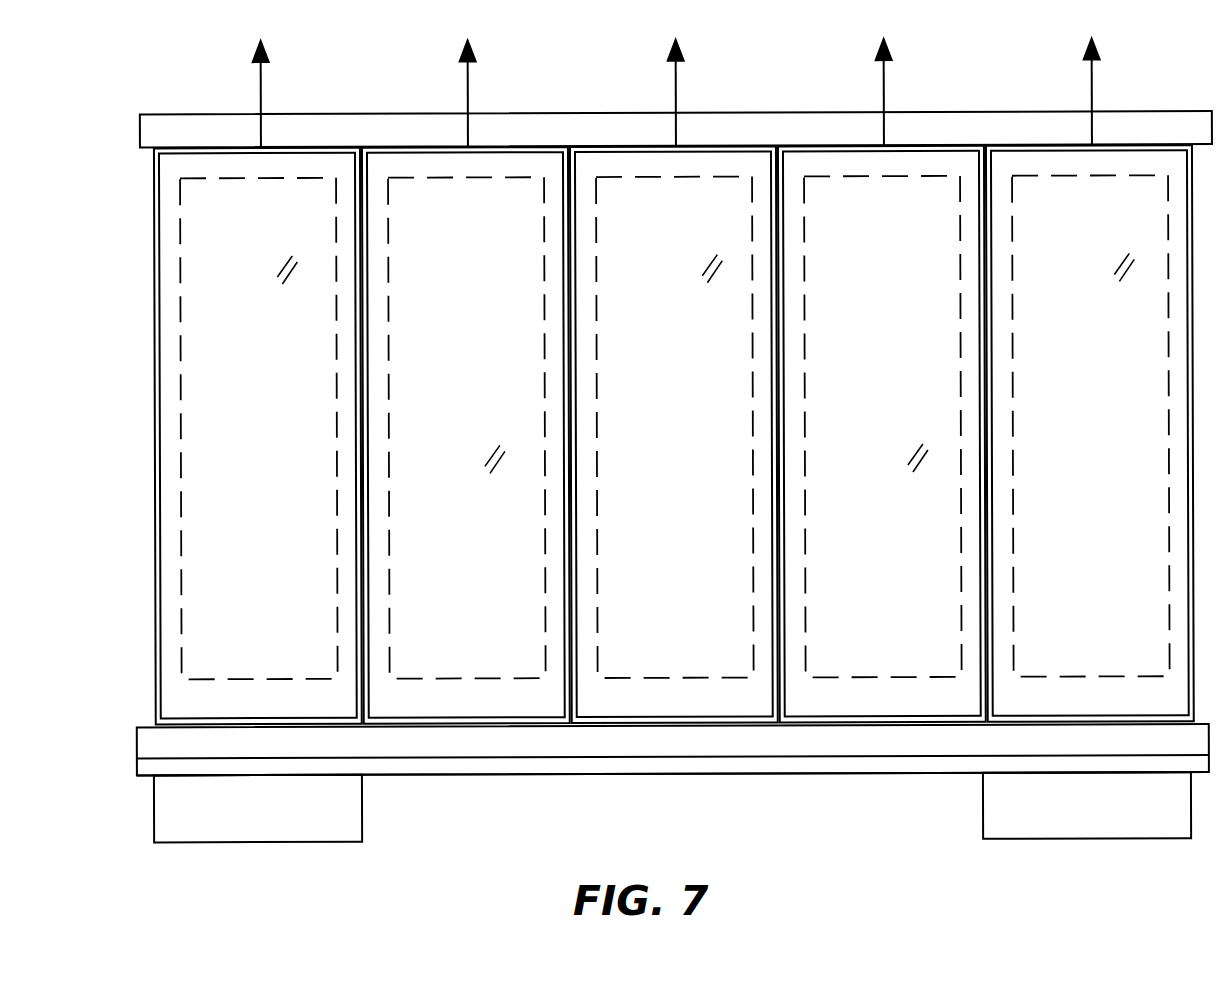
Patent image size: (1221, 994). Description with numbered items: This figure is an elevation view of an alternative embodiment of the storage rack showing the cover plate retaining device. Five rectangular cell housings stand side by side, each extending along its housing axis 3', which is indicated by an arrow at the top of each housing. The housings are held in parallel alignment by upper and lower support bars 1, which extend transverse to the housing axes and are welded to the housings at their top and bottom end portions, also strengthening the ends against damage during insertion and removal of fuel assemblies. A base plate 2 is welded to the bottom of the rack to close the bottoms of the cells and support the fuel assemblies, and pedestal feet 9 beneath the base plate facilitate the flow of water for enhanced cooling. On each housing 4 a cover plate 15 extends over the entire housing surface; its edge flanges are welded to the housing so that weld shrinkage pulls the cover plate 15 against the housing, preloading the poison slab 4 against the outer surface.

The support bar 1 is at (158, 133).
The base plate 2 is at (723, 768).
The housing axis 3' is at (723, 93).
The housing 4 is at (182, 392).
The pedestal feet 9 is at (325, 803).
The cover plate 15 is at (675, 427).